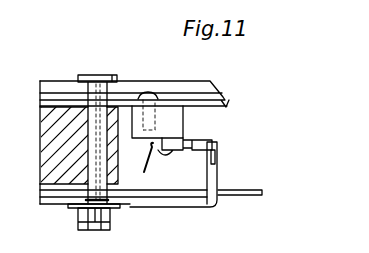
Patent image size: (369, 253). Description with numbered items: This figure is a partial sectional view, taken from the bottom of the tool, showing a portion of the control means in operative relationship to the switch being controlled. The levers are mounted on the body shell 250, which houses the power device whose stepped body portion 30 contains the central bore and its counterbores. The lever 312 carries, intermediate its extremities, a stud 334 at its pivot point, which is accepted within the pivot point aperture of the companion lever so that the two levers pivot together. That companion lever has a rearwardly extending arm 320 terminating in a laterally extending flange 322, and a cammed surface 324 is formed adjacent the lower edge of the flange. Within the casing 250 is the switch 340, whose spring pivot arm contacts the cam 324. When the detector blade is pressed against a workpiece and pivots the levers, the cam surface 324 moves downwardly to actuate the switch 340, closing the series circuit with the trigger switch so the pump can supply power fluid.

The stepped body portion 30 is at (40, 127).
The body shell 250 is at (254, 93).
The lever 312 is at (138, 84).
The rearwardly extending arm 320 is at (160, 197).
The laterally extending flange 322 is at (216, 194).
The cammed surface 324 is at (216, 159).
The stud 334 is at (92, 75).
The switch 340 is at (186, 137).